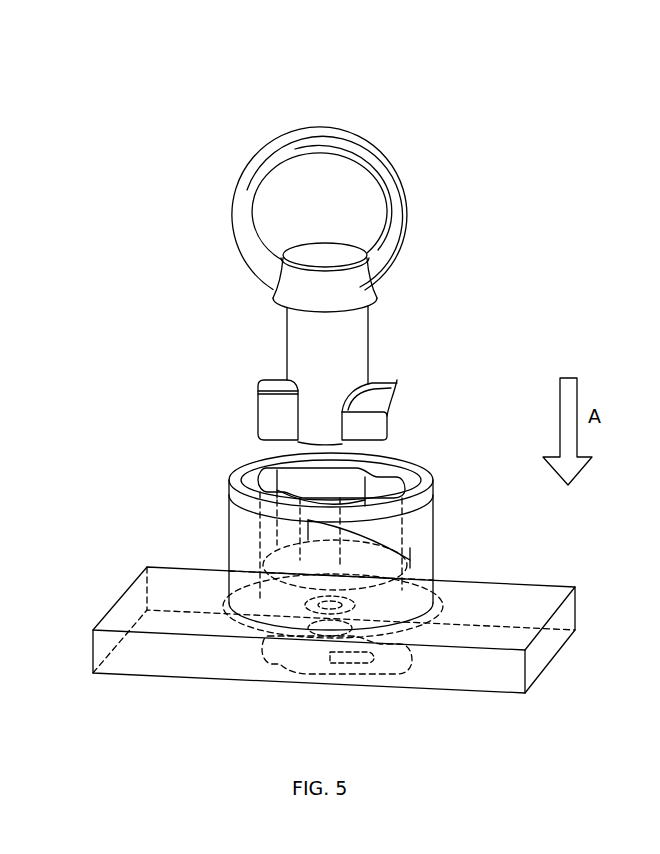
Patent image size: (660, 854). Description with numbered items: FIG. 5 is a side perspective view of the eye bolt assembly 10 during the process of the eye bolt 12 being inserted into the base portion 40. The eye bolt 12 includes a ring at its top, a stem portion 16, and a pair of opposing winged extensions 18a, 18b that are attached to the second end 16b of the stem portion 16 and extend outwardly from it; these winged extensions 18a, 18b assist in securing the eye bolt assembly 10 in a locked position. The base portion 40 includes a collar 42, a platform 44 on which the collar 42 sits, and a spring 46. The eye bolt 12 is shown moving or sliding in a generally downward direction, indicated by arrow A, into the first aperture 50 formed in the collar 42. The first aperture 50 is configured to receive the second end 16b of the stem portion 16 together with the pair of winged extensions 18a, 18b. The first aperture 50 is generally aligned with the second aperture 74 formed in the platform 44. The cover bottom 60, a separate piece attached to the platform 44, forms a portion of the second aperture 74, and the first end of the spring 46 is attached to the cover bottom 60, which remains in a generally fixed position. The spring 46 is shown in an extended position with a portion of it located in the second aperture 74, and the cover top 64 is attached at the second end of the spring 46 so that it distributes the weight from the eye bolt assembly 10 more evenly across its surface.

The eye bolt assembly 10 is at (450, 123).
The eye bolt 12 is at (430, 200).
The stem portion 16 is at (372, 325).
The second end of the stem portion 16b is at (394, 436).
The winged extension 18a is at (398, 377).
The winged extension 18b is at (250, 400).
The base portion 40 is at (488, 568).
The collar 42 is at (437, 530).
The platform 44 is at (553, 668).
The spring 46 is at (385, 668).
The first aperture 50 is at (392, 482).
The cover bottom 60 is at (310, 672).
The cover top 64 is at (290, 545).
The second aperture 74 is at (282, 650).